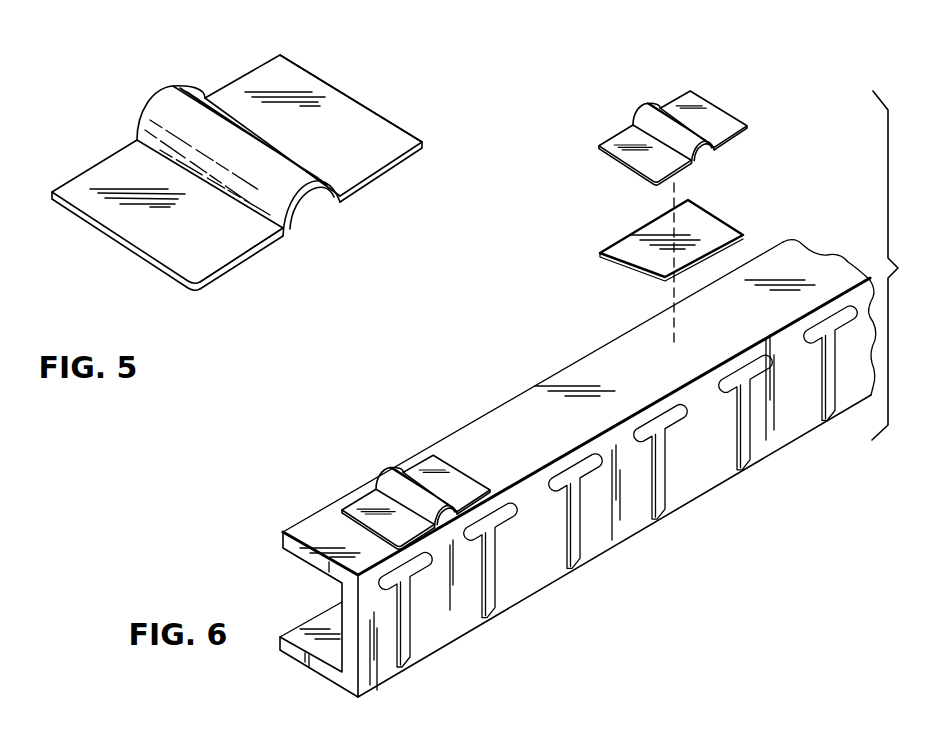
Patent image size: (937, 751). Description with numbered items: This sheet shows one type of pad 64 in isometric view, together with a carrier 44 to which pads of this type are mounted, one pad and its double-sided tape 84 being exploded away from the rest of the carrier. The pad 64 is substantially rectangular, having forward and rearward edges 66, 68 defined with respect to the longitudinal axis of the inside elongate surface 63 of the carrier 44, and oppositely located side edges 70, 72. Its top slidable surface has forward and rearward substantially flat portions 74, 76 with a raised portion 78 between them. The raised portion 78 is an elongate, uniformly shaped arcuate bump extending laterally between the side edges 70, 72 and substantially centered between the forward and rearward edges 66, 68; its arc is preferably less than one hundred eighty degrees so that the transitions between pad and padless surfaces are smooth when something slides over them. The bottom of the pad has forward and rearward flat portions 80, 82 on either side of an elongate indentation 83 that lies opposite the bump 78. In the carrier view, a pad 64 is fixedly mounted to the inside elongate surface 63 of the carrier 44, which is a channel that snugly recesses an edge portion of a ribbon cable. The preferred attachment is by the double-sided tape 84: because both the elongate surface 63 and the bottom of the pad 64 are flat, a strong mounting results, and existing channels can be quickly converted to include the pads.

In FIG. 6, the carrier 44 is at (662, 553).
In FIG. 6, the inside elongate surface 63 is at (580, 368).
In FIG. 5, the pad 64 is at (134, 73).
In FIG. 6, the pad 64 is at (727, 128).
In FIG. 5, the forward edge 66 is at (97, 235).
In FIG. 5, the rearward edge 68 is at (323, 82).
In FIG. 5, the side edge 70 is at (107, 155).
In FIG. 5, the side edge 72 is at (260, 247).
In FIG. 5, the forward flat portion 74 is at (167, 237).
In FIG. 5, the rearward flat portion 76 is at (362, 118).
In FIG. 5, the raised portion 78 is at (190, 100).
In FIG. 5, the forward flat portion 80 is at (223, 273).
In FIG. 5, the rearward flat portion 82 is at (380, 183).
In FIG. 5, the elongate indentation 83 is at (308, 192).
In FIG. 6, the double-sided tape 84 is at (713, 207).